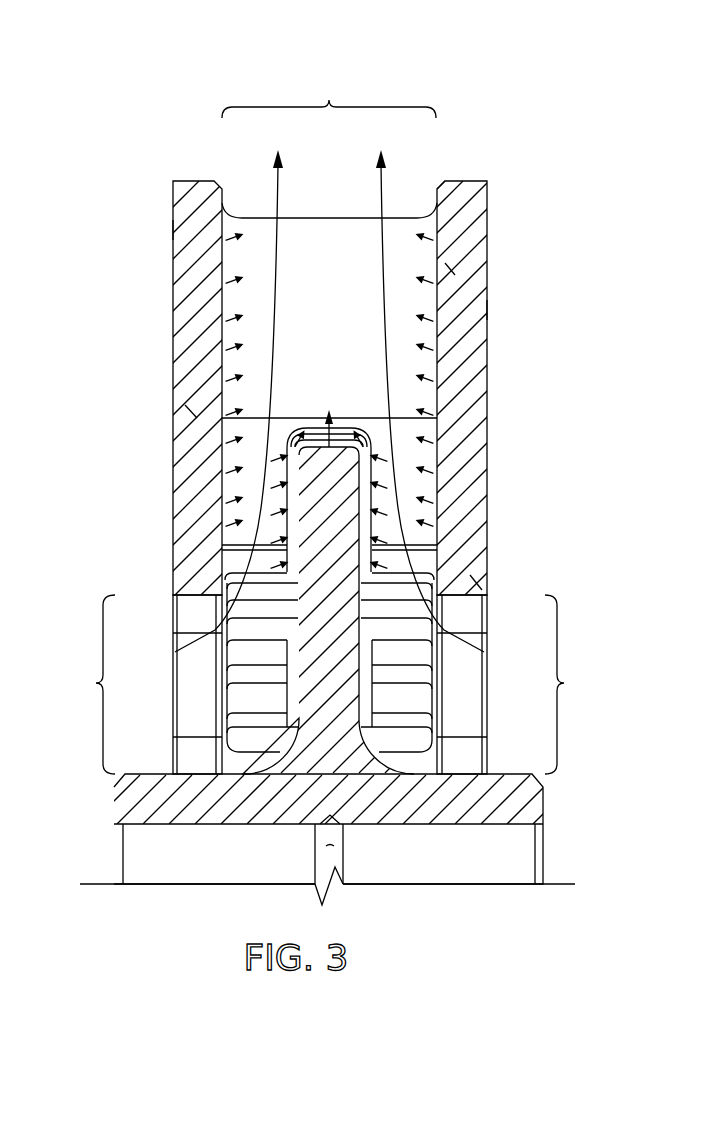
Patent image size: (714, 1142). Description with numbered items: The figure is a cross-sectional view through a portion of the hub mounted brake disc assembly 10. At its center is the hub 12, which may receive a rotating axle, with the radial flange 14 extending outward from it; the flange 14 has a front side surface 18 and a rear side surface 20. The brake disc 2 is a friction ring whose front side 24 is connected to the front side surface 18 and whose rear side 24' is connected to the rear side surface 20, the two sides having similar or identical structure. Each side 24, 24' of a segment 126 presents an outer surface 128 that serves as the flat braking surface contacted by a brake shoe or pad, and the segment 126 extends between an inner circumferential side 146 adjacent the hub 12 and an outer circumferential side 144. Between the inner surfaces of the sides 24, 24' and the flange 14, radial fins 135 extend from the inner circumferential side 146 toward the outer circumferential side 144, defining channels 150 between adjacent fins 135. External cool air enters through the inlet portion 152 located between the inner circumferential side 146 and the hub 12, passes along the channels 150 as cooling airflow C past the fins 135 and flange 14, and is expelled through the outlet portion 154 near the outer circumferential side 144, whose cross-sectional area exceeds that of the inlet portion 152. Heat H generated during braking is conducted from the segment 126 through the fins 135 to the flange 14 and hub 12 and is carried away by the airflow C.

The hub mounted brake disc assembly 10 is at (578, 31).
The brake disc 2 is at (498, 138).
The front side 24 is at (307, 455).
The rear side 24' is at (368, 477).
The outlet portion 154 is at (329, 89).
The outer circumferential side 144 is at (478, 199).
The outer surface 128 is at (172, 228).
The radial fins 135 is at (440, 269).
The segment 126 is at (190, 411).
The cooling airflow C is at (275, 308).
The heat H is at (440, 378).
The channels 150 is at (348, 301).
The front side surface 18 is at (290, 490).
The radial flange 14 is at (343, 526).
The rear side surface 20 is at (385, 563).
The inner circumferential side 146 is at (478, 586).
The inlet portion 152 is at (328, 684).
The hub 12 is at (530, 798).